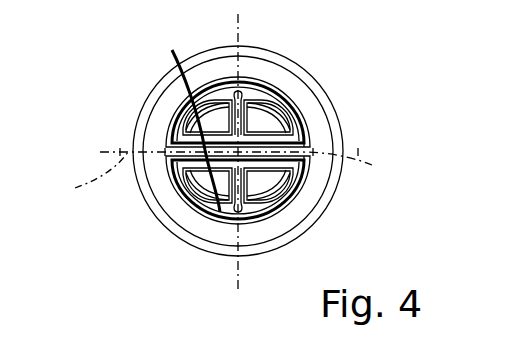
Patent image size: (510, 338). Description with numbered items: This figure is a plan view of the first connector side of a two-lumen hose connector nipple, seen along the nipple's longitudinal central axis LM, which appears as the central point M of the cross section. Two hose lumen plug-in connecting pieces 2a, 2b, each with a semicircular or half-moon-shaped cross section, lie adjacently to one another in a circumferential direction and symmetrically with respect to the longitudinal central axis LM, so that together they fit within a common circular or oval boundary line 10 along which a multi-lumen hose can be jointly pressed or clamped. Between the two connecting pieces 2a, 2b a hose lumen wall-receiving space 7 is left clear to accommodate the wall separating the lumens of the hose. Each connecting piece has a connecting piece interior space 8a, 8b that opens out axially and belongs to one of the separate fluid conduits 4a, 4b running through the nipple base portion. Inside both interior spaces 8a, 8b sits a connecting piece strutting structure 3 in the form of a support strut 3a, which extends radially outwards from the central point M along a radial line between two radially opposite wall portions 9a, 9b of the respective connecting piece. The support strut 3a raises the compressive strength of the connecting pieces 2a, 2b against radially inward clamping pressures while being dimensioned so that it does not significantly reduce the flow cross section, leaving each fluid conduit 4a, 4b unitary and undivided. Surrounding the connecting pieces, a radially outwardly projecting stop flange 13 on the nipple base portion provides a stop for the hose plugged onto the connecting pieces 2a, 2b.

The hose lumen plug-in connecting piece 2a is at (306, 103).
The hose lumen plug-in connecting piece 2b is at (300, 205).
The connecting piece strutting structure 3 is at (183, 120).
The support strut 3a is at (233, 130).
The fluid conduit 4a is at (252, 95).
The fluid conduit 4b is at (247, 180).
The hose lumen wall-receiving space 7 is at (313, 138).
The connecting piece interior space 8a is at (186, 127).
The connecting piece interior space 8b is at (200, 183).
The wall portion 9a is at (245, 125).
The wall portion 9b is at (290, 110).
The boundary line 10 is at (163, 135).
The stop flange 13 is at (286, 231).
The central point M is at (250, 152).
The longitudinal central axis LM is at (82, 176).